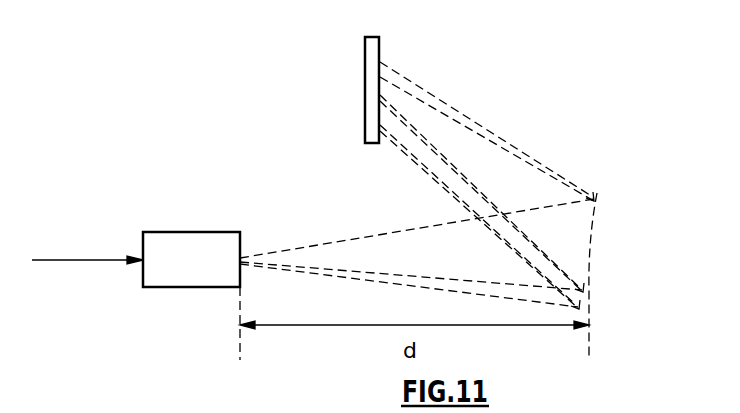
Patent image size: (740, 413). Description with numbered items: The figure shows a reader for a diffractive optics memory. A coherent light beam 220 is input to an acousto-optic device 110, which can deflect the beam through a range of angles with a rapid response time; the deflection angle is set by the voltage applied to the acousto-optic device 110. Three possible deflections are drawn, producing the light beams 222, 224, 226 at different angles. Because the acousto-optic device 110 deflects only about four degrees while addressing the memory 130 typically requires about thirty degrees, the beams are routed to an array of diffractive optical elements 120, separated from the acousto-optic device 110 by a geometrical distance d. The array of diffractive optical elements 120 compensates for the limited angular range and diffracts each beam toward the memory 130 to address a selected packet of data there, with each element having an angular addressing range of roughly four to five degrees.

The acousto-optic device 110 is at (188, 232).
The array of diffractive optical elements 120 is at (605, 220).
The memory 130 is at (378, 44).
The coherent light beam 220 is at (88, 258).
The light beam 222 is at (459, 110).
The light beam 224 is at (397, 276).
The light beam 226 is at (428, 288).